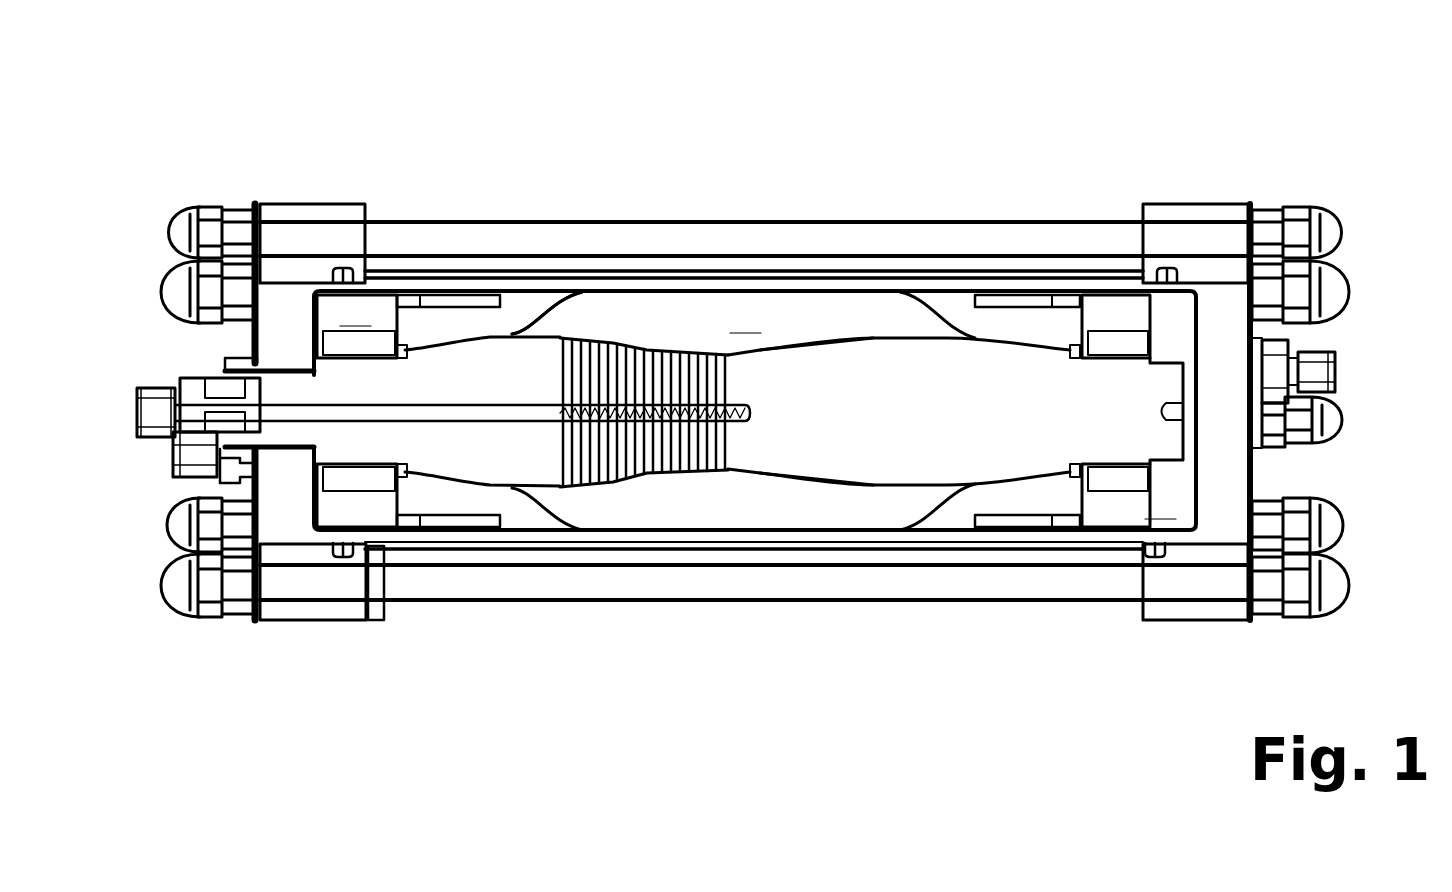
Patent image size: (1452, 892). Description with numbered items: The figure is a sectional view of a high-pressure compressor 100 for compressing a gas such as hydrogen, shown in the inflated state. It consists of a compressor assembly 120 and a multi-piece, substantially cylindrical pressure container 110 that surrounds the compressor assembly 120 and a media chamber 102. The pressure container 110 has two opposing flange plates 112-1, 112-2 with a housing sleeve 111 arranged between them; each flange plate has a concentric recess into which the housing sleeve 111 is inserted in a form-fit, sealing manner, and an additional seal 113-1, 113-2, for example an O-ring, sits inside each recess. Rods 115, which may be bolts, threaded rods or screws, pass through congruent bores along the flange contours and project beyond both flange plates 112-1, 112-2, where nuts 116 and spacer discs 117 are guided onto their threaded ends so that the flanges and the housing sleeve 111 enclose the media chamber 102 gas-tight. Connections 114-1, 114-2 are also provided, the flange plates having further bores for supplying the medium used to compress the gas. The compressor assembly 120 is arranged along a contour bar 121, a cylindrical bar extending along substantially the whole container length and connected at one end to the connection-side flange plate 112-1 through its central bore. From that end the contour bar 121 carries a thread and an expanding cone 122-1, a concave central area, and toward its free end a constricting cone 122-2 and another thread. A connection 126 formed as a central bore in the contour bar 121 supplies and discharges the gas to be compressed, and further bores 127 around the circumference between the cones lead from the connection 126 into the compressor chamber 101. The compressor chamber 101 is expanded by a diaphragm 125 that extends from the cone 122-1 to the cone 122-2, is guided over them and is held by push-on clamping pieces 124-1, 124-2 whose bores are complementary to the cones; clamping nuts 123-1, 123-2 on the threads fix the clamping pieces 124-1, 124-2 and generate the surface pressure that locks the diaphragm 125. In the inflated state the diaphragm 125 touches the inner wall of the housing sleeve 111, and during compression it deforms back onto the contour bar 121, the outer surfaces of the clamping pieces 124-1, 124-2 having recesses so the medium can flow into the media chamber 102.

The high-pressure compressor 100 is at (1008, 132).
The compressor chamber 101 is at (743, 411).
The media chamber 102 is at (755, 410).
The pressure container 110 is at (1216, 492).
The housing sleeve 111 is at (822, 537).
The flange plate 112-1 is at (282, 520).
The flange plate 112-2 is at (1222, 348).
The seal 113-1 is at (340, 558).
The seal 113-2 is at (1163, 558).
The connection 114-1 is at (173, 468).
The connection 114-2 is at (1273, 373).
The rod 115 is at (635, 587).
The nut 116 is at (1295, 243).
The spacer disc 117 is at (1262, 212).
The compressor assembly 120 is at (789, 502).
The contour bar 121 is at (837, 433).
The cone 122-1 is at (482, 342).
The cone 122-2 is at (1043, 352).
The clamping nut 123-1 is at (370, 483).
The clamping nut 123-2 is at (1115, 477).
The clamping piece 124-1 is at (520, 513).
The clamping piece 124-2 is at (960, 513).
The diaphragm 125 is at (758, 294).
The connection 126 is at (415, 410).
The bores 127 is at (601, 335).